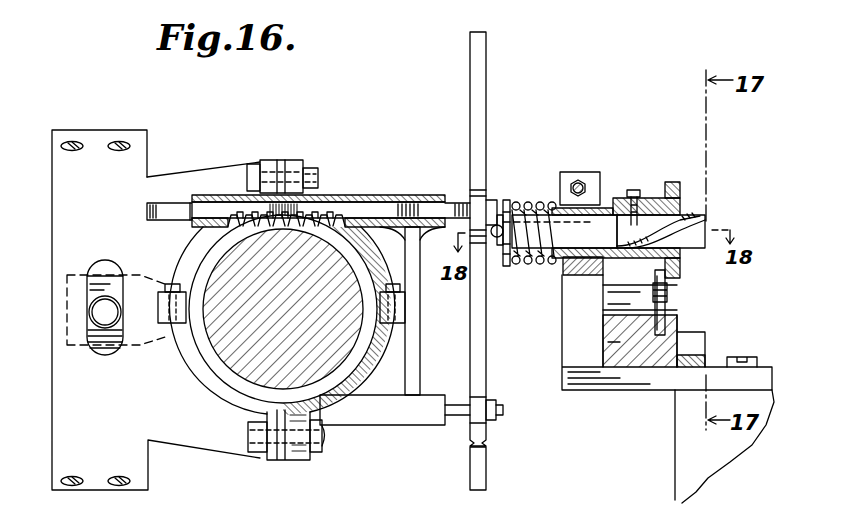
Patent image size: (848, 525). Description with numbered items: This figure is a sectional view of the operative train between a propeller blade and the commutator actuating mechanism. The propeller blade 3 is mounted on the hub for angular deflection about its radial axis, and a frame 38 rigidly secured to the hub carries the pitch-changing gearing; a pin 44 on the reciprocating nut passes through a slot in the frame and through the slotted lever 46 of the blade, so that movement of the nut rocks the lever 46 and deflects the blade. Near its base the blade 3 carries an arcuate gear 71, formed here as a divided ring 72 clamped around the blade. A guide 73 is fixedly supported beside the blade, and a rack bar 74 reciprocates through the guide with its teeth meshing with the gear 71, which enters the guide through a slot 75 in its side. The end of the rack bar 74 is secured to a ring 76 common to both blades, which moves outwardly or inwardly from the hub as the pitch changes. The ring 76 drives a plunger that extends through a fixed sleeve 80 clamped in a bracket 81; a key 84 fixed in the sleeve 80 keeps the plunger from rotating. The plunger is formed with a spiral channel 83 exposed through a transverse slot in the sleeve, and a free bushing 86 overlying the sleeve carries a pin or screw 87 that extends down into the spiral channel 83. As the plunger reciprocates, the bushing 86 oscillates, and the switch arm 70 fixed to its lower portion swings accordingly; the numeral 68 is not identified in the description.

The propeller blade 3 is at (338, 355).
The frame 38 is at (60, 423).
The pin 44 is at (98, 313).
The lever 46 is at (106, 345).
The pin 68 is at (665, 311).
The switch arm 70 is at (668, 291).
The arcuate gear 71 is at (218, 236).
The divided ring 72 is at (368, 334).
The guide 73 is at (362, 180).
The rack bar 74 is at (416, 180).
The slot 75 is at (240, 205).
The ring 76 is at (486, 92).
The fixed sleeve 80 is at (570, 268).
The bracket 81 is at (572, 377).
The spiral channel 83 is at (705, 222).
The key 84 is at (578, 208).
The free bushing 86 is at (688, 166).
The pin or screw 87 is at (633, 190).